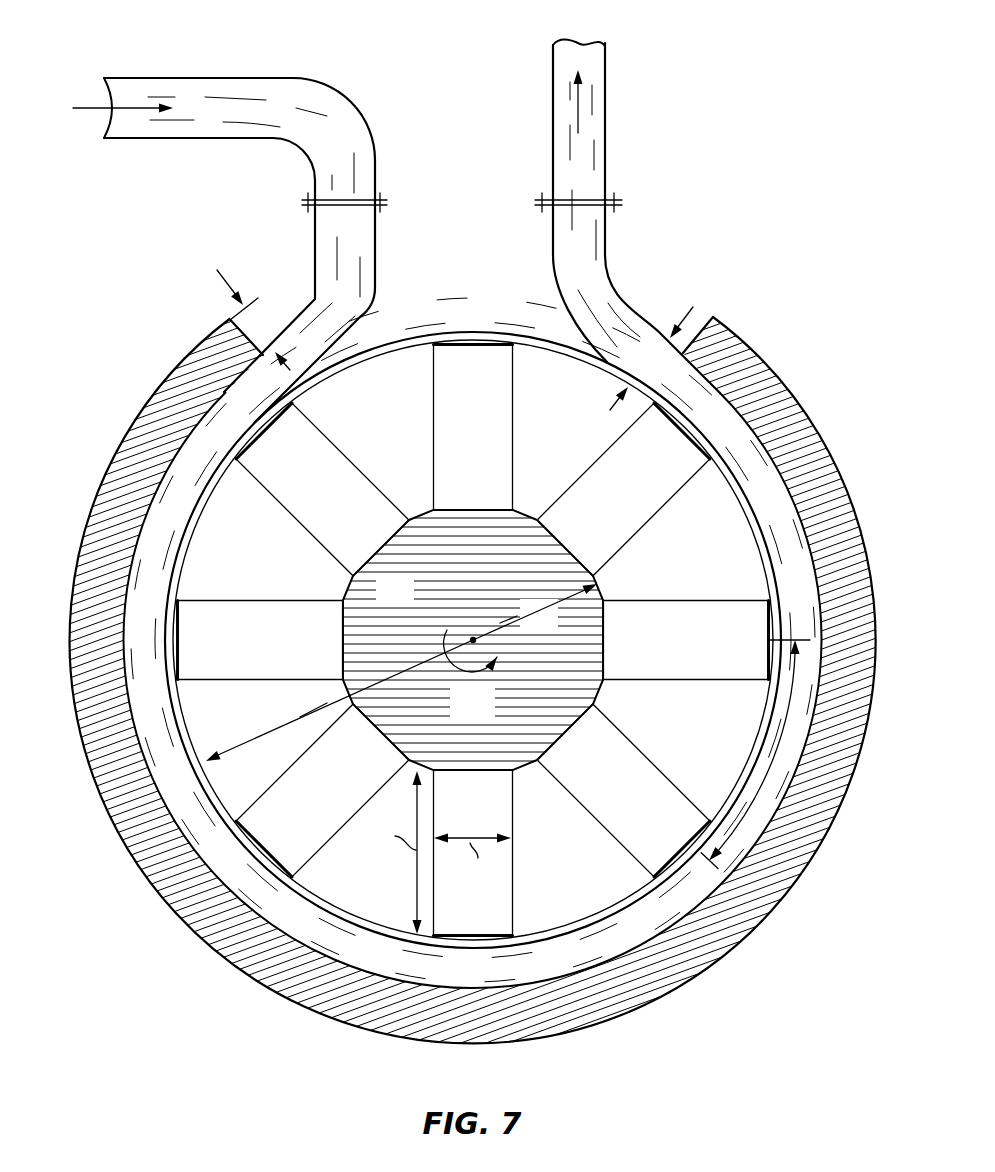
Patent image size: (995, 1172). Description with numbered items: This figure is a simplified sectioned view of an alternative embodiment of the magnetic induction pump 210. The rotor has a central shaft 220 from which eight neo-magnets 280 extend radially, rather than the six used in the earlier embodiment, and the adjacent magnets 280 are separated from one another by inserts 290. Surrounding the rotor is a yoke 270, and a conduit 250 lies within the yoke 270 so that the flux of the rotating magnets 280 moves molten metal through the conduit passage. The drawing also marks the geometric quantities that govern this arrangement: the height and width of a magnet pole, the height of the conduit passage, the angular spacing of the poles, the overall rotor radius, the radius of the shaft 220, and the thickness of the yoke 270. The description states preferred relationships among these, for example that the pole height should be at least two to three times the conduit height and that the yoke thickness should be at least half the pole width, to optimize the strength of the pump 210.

The pump 210 is at (497, 606).
The shaft 220 is at (490, 714).
The conduit 250 is at (580, 250).
The yoke 270 is at (728, 353).
The neo-magnets 280 is at (617, 763).
The inserts 290 is at (242, 545).